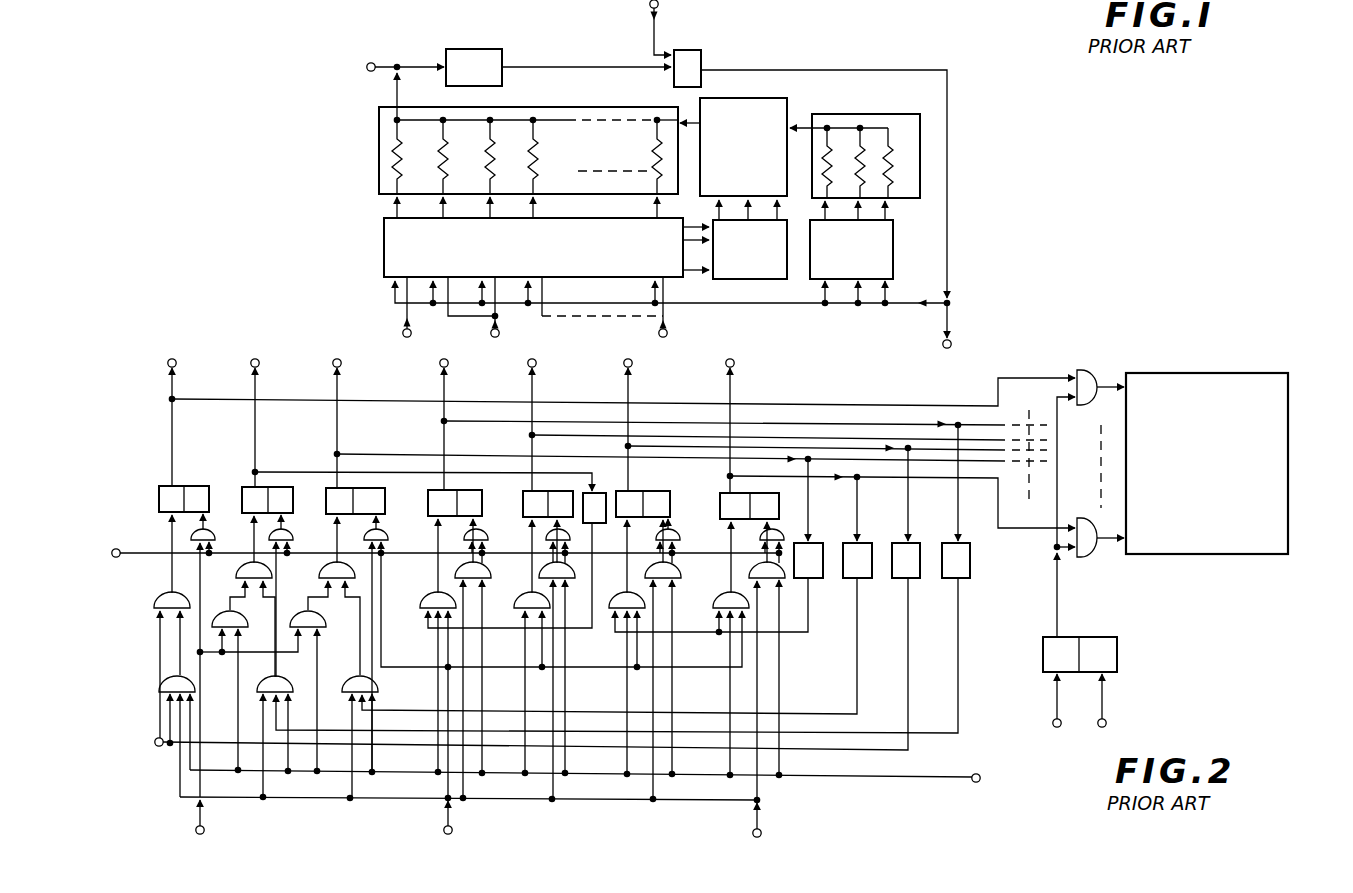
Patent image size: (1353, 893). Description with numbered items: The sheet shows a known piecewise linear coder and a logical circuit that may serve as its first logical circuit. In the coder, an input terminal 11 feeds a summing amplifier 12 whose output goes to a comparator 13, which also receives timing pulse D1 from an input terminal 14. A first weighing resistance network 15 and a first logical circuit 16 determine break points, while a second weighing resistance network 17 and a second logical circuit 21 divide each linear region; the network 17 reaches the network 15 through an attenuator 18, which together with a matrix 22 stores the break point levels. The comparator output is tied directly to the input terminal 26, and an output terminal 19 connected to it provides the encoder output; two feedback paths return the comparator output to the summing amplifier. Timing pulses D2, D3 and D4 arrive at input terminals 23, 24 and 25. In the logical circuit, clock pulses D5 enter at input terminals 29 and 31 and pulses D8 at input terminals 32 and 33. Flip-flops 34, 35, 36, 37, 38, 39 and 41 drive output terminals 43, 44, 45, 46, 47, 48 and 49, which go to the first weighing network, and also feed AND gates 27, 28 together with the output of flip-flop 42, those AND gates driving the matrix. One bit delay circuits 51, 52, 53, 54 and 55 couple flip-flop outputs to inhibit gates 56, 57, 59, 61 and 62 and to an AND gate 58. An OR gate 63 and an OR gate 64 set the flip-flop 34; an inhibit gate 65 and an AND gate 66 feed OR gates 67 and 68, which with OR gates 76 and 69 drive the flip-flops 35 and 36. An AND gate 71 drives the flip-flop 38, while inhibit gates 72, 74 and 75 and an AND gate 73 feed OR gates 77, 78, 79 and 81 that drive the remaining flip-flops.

In FIG. 1, the input terminal 11 is at (366, 68).
In FIG. 1, the summing amplifier 12 is at (500, 34).
In FIG. 1, the comparator 13 is at (688, 52).
In FIG. 1, the input terminal 14 is at (648, 6).
In FIG. 1, the first weighing resistance network 15 is at (379, 165).
In FIG. 1, the first logical circuit 16 is at (387, 262).
In FIG. 1, the second weighing resistance network 17 is at (918, 129).
In FIG. 1, the attenuator 18 is at (782, 104).
In FIG. 1, the output terminal 19 is at (951, 343).
In FIG. 1, the second logical circuit 21 is at (887, 241).
In FIG. 1, the matrix 22 is at (740, 262).
In FIG. 2, the matrix 22 is at (1288, 503).
In FIG. 1, the input terminal 23 is at (403, 331).
In FIG. 2, the input terminal 23 is at (154, 742).
In FIG. 1, the input terminal 24 is at (500, 334).
In FIG. 2, the input terminal 24 is at (205, 829).
In FIG. 1, the input terminal 25 is at (667, 334).
In FIG. 2, the input terminal 25 is at (455, 829).
In FIG. 1, the input terminal 26 is at (952, 304).
In FIG. 2, the input terminal 26 is at (973, 782).
In FIG. 2, the AND gate 27 is at (1084, 380).
In FIG. 2, the AND gate 28 is at (1083, 555).
In FIG. 2, the input terminal 29 is at (763, 832).
In FIG. 2, the input terminal 31 is at (1052, 721).
In FIG. 2, the input terminal 32 is at (113, 550).
In FIG. 2, the input terminal 33 is at (1107, 722).
In FIG. 2, the flip-flop 34 is at (198, 490).
In FIG. 2, the flip-flop 35 is at (287, 498).
In FIG. 2, the flip-flop 36 is at (380, 498).
In FIG. 2, the flip-flop 37 is at (474, 502).
In FIG. 2, the flip-flop 38 is at (525, 510).
In FIG. 2, the flip-flop 39 is at (660, 500).
In FIG. 2, the flip-flop 41 is at (720, 502).
In FIG. 2, the flip-flop 42 is at (1117, 645).
In FIG. 2, the output terminal 43 is at (167, 367).
In FIG. 2, the output terminal 44 is at (250, 367).
In FIG. 2, the output terminal 45 is at (332, 367).
In FIG. 2, the output terminal 46 is at (440, 367).
In FIG. 2, the output terminal 47 is at (528, 367).
In FIG. 2, the output terminal 48 is at (623, 367).
In FIG. 2, the output terminal 49 is at (726, 367).
In FIG. 2, the one bit delay circuit 51 is at (596, 502).
In FIG. 2, the one bit delay circuit 52 is at (812, 546).
In FIG. 2, the one bit delay circuit 53 is at (862, 546).
In FIG. 2, the one bit delay circuit 54 is at (912, 546).
In FIG. 2, the one bit delay circuit 55 is at (970, 556).
In FIG. 2, the inhibit gate 56 is at (428, 598).
In FIG. 2, the inhibit gate 57 is at (612, 612).
In FIG. 2, the AND gate 58 is at (718, 606).
In FIG. 2, the inhibit gate 59 is at (376, 687).
In FIG. 2, the inhibit gate 61 is at (162, 680).
In FIG. 2, the inhibit gate 62 is at (270, 682).
In FIG. 2, the OR gate 63 is at (156, 609).
In FIG. 2, the OR gate 64 is at (218, 538).
In FIG. 2, the inhibit gate 65 is at (244, 624).
In FIG. 2, the AND gate 66 is at (330, 620).
In FIG. 2, the OR gate 67 is at (245, 575).
In FIG. 2, the OR gate 68 is at (325, 574).
In FIG. 2, the OR gate 69 is at (386, 536).
In FIG. 2, the AND gate 71 is at (524, 604).
In FIG. 2, the inhibit gate 72 is at (484, 574).
In FIG. 2, the AND gate 73 is at (568, 580).
In FIG. 2, the inhibit gate 74 is at (680, 570).
In FIG. 2, the inhibit gate 75 is at (783, 580).
In FIG. 2, the OR gate 76 is at (291, 533).
In FIG. 2, the OR gate 77 is at (488, 536).
In FIG. 2, the OR gate 78 is at (571, 536).
In FIG. 2, the OR gate 79 is at (678, 536).
In FIG. 2, the OR gate 81 is at (764, 543).